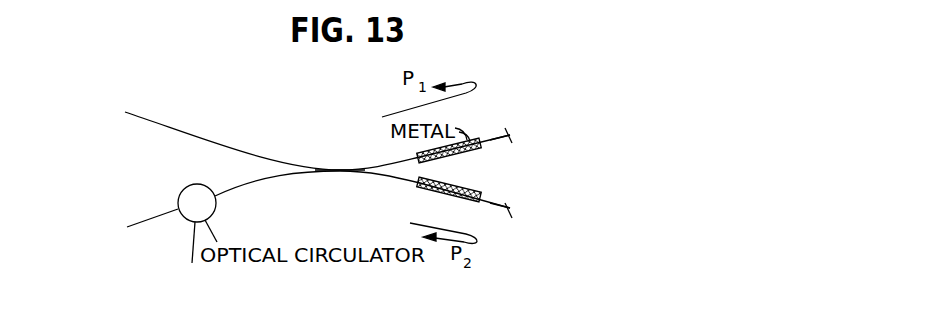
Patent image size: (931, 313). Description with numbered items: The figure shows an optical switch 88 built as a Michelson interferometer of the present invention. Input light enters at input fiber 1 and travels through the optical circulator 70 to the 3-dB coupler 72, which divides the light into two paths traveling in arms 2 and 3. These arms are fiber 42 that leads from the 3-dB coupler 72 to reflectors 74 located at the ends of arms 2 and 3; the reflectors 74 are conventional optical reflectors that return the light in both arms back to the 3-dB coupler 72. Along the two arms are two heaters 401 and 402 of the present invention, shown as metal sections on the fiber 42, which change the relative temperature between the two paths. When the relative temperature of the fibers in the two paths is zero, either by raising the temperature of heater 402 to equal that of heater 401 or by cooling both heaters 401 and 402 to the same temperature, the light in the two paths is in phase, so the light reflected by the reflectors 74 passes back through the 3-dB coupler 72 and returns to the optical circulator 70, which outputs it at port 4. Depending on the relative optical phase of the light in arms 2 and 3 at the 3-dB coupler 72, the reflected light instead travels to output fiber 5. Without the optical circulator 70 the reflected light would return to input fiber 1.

The input fiber 1 is at (144, 227).
The arm 2 is at (500, 121).
The arm 3 is at (500, 224).
The output fiber 4 is at (188, 258).
The output fiber 5 is at (223, 134).
The fiber 42 is at (247, 152).
The optical circulator 70 is at (197, 203).
The 3-dB coupler 72 is at (337, 173).
The reflectors 74 is at (513, 128).
The optical switch 88 is at (325, 128).
The heater 401 is at (463, 187).
The heater 402 is at (473, 188).